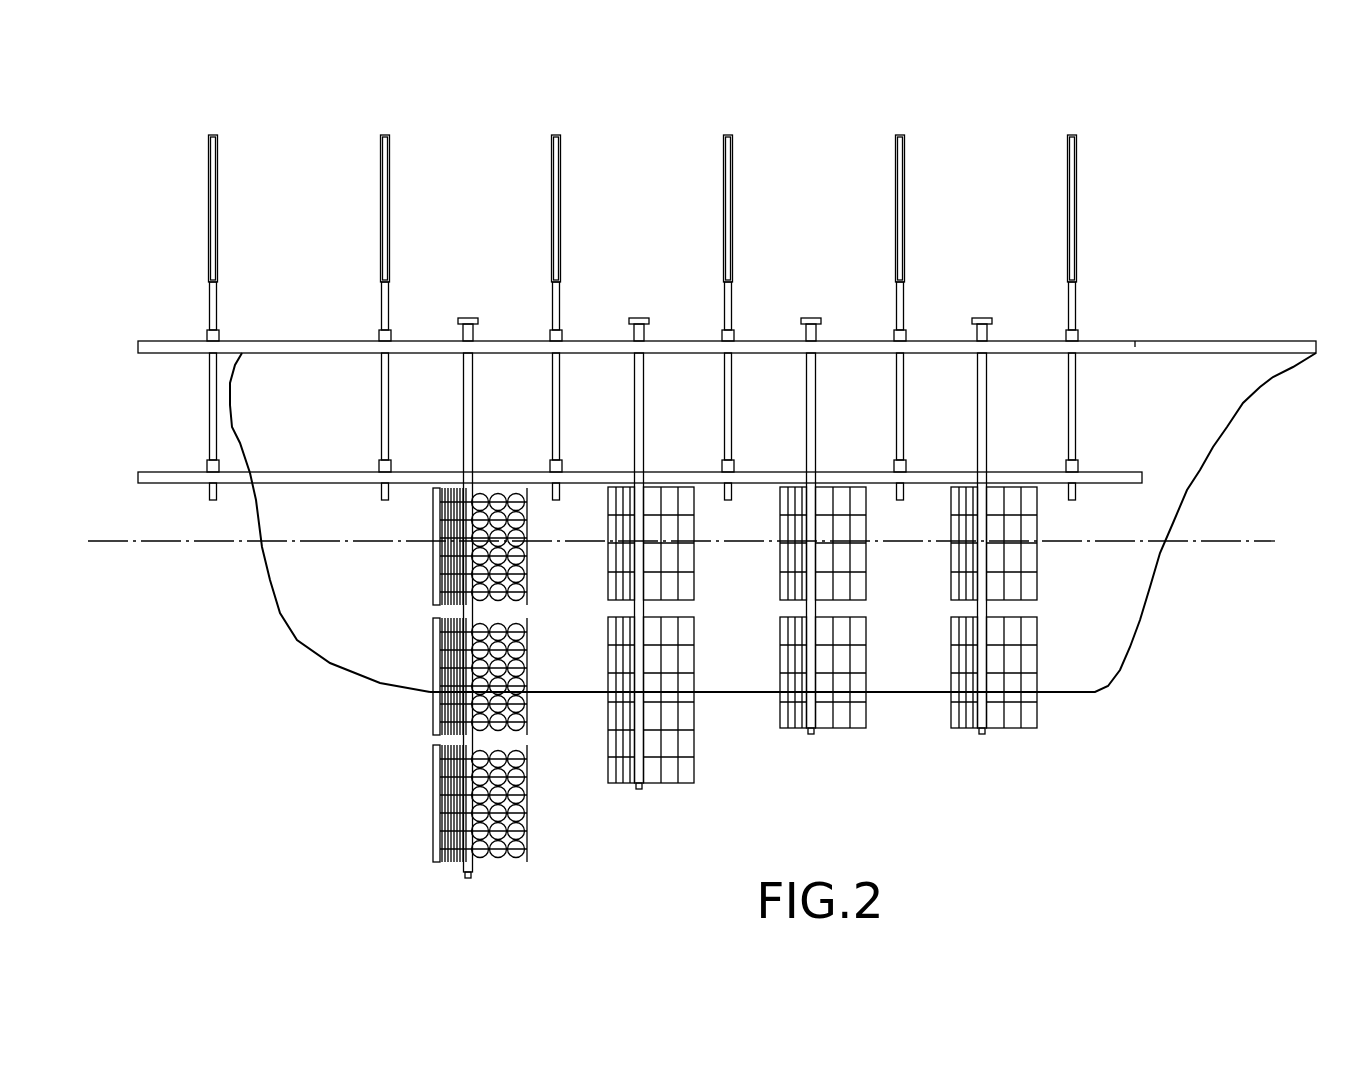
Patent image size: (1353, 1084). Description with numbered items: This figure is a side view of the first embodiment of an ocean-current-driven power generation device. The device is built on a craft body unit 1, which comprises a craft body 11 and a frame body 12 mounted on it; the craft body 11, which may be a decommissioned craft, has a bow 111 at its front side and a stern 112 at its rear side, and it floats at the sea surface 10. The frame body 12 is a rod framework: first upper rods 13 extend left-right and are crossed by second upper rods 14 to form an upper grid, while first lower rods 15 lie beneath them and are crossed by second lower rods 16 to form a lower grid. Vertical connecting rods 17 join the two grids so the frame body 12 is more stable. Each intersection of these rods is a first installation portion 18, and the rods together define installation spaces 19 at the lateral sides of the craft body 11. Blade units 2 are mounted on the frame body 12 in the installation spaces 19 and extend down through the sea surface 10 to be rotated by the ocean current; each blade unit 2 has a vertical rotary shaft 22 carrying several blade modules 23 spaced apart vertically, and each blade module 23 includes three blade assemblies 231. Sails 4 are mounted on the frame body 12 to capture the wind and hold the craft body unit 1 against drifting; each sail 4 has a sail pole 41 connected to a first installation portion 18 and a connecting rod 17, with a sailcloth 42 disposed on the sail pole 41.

The craft body unit 1 is at (748, 559).
The sea surface 10 is at (1240, 542).
The craft body 11 is at (748, 559).
The bow 111 is at (1183, 492).
The stern 112 is at (265, 513).
The frame body 12 is at (727, 439).
The first upper rods 13 is at (209, 336).
The second upper rods 14 is at (1137, 348).
The first lower rods 15 is at (208, 462).
The second lower rods 16 is at (1070, 484).
The connecting rods 17 is at (214, 390).
The first installation portion 18 is at (221, 341).
The installation spaces 19 is at (514, 386).
The blade units 2 is at (700, 707).
The rotary shaft 22 is at (471, 366).
The blade modules 23 is at (735, 707).
The blade assemblies 231 is at (615, 789).
The sails 4 is at (709, 366).
The sail pole 41 is at (213, 303).
The sailcloth 42 is at (213, 210).